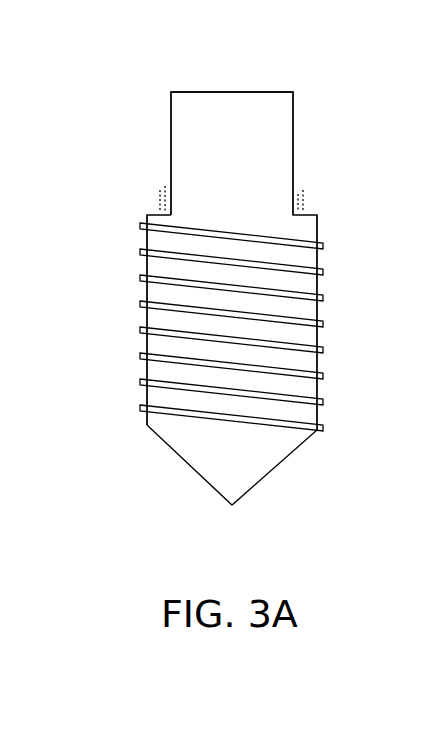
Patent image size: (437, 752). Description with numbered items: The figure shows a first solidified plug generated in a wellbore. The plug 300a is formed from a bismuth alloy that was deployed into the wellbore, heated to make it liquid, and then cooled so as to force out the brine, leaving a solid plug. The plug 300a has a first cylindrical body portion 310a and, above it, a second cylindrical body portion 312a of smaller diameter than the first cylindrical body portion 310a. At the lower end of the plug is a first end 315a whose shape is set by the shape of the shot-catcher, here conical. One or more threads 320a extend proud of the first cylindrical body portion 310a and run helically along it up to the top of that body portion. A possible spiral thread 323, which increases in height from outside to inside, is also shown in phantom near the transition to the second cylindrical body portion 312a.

The plug 300a is at (236, 130).
The second cylindrical body portion 312a is at (274, 163).
The spiral thread 323 is at (148, 209).
The first cylindrical body portion 310a is at (297, 362).
The threads 320a is at (163, 257).
The first end 315a is at (263, 462).